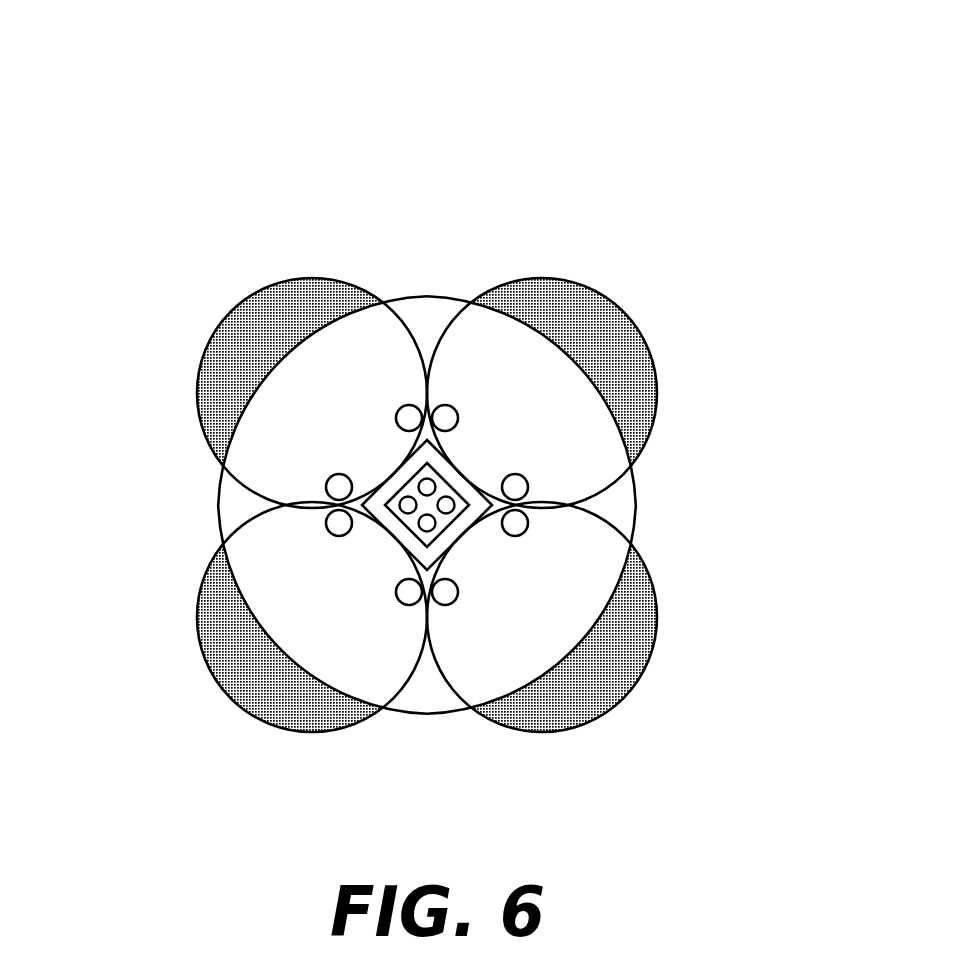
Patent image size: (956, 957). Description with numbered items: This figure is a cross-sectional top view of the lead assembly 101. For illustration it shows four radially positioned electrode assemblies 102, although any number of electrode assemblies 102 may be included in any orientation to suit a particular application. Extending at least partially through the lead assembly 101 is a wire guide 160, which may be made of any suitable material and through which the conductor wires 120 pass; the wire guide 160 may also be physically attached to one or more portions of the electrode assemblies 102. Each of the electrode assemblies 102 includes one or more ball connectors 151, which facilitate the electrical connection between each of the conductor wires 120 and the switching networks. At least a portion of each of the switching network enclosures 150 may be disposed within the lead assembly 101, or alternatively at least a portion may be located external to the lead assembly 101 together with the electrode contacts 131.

The lead assembly 101 is at (352, 128).
The electrode assembly 102 is at (585, 272).
The conductor wire 120 is at (428, 488).
The electrode contact 131 is at (624, 342).
The switching network enclosure 150 is at (548, 425).
The ball connector 151 is at (517, 530).
The wire guide 160 is at (480, 505).